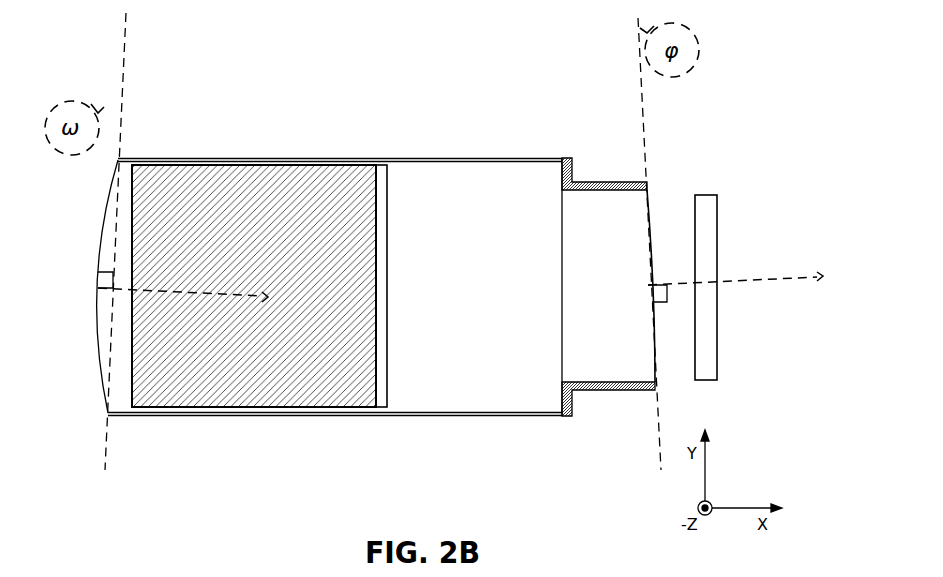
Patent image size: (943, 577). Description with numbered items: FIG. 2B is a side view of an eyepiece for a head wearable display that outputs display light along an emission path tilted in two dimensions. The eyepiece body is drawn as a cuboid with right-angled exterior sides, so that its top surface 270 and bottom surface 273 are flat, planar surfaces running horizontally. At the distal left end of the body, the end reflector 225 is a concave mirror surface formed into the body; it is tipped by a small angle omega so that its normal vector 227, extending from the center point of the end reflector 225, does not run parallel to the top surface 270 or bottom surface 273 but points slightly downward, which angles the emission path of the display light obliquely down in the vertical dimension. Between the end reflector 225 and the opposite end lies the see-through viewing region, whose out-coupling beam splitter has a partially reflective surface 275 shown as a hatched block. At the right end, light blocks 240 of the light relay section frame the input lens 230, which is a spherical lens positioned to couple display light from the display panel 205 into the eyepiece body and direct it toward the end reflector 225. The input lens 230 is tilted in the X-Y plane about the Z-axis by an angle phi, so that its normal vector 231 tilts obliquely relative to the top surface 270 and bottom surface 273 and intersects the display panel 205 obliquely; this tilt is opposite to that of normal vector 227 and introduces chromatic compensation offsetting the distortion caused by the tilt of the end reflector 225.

The display panel 205 is at (717, 219).
The end reflector 225 is at (100, 362).
The normal vector 227 is at (245, 293).
The input lens 230 is at (648, 228).
The normal vector 231 is at (752, 282).
The light blocks 240 is at (567, 172).
The top surface 270 is at (310, 158).
The bottom surface 273 is at (268, 413).
The partially reflective surface 275 is at (259, 286).